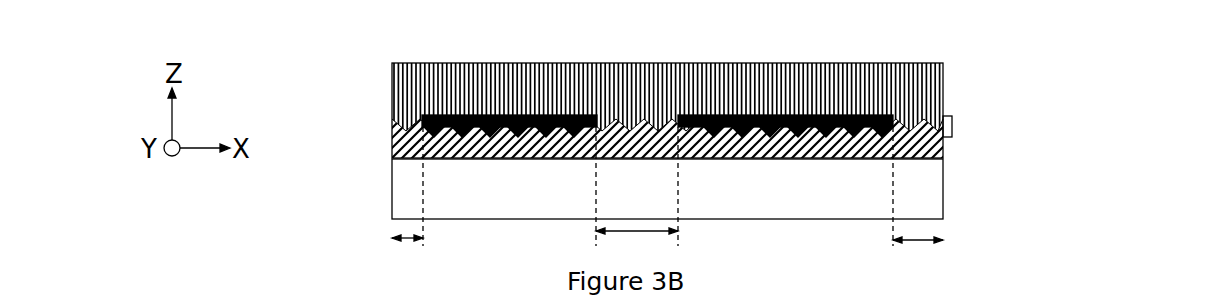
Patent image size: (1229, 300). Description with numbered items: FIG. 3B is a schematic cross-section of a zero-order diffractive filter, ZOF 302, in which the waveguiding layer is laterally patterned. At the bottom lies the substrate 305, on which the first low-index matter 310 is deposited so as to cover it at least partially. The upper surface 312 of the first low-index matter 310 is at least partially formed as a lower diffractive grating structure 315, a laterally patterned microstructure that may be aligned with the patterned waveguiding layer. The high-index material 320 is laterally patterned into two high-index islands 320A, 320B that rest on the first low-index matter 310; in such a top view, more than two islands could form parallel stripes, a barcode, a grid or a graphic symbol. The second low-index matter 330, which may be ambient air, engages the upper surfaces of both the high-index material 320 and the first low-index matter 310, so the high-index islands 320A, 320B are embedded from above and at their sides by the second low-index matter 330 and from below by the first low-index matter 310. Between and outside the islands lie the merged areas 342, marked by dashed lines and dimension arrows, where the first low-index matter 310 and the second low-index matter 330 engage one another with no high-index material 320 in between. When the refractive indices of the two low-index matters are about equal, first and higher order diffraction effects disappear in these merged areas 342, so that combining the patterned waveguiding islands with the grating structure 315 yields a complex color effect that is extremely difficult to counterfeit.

The ZOF 302 is at (1050, 110).
The substrate 305 is at (392, 196).
The first low-index matter 310 is at (392, 141).
The upper surface 312 is at (392, 125).
The lower diffractive grating structure 315 is at (952, 126).
The high-index material 320 is at (582, 73).
The high-index island 320A is at (518, 113).
The high-index island 320B is at (828, 113).
The second low-index matter 330 is at (391, 80).
The merged area 342 is at (669, 204).